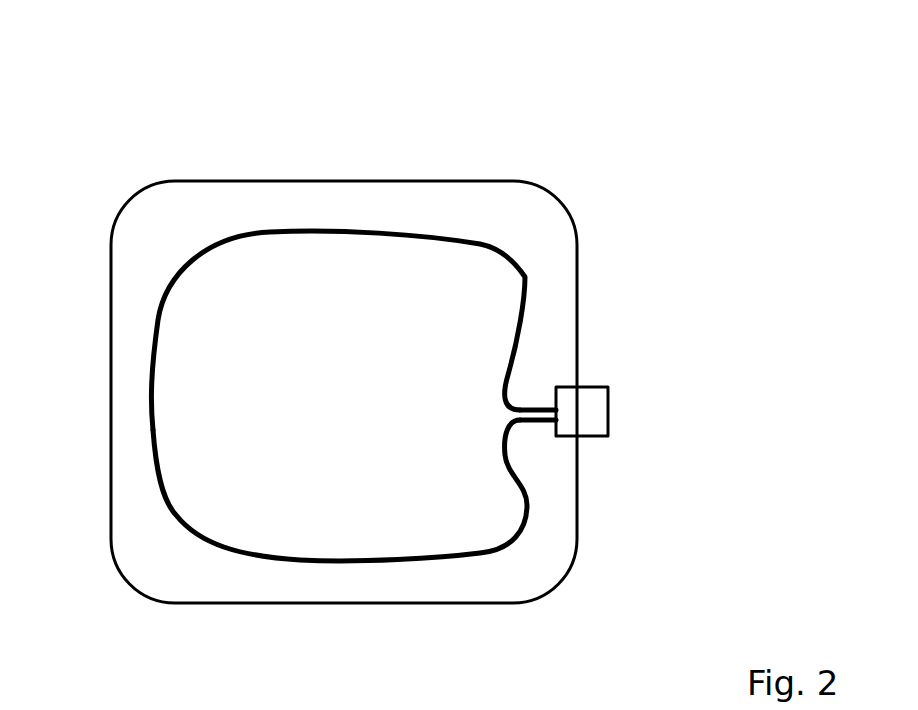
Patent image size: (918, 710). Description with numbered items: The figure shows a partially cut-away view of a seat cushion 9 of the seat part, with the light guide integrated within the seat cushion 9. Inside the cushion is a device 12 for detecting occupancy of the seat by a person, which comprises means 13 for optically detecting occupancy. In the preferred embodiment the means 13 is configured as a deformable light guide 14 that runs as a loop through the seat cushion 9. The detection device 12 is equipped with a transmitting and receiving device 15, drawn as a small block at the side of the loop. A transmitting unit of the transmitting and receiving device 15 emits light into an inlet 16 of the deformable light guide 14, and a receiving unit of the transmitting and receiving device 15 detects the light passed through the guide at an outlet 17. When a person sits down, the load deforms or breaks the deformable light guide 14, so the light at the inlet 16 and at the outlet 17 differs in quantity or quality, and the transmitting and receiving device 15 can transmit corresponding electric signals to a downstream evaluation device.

The seat cushion 9 is at (145, 560).
The device for detecting occupancy of the seat 12 is at (431, 145).
The means for optically detecting occupancy 13 is at (525, 277).
The deformable light guide 14 is at (390, 563).
The transmitting and receiving device 15 is at (593, 393).
The inlet 16 is at (542, 422).
The outlet 17 is at (546, 408).